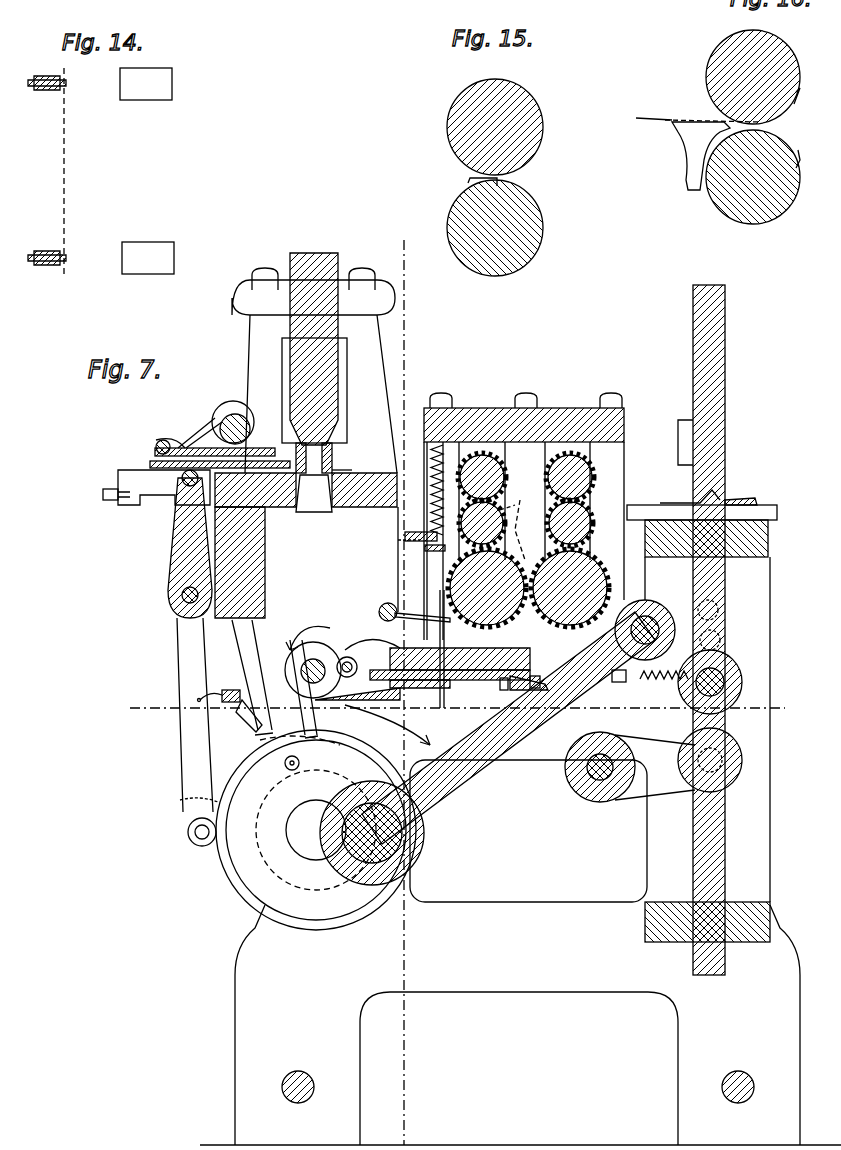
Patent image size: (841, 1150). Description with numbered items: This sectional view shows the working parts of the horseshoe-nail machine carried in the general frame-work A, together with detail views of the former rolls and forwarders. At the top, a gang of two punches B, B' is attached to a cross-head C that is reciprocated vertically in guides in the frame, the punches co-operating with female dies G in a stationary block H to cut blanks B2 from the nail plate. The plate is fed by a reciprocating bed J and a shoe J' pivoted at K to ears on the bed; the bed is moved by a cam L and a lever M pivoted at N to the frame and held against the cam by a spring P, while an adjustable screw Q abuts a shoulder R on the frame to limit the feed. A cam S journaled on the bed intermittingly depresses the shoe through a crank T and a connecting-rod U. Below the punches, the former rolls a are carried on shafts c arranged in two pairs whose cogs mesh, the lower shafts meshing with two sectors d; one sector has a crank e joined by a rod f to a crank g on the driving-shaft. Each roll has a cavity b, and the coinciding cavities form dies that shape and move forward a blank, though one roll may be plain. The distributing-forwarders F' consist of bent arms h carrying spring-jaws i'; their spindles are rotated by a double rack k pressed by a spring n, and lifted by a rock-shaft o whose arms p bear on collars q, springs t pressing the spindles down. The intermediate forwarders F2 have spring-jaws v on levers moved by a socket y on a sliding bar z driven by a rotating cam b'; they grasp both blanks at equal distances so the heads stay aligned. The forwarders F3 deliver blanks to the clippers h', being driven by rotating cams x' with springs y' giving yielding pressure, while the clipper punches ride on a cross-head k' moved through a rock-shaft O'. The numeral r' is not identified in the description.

In FIG. 7, the frame-work A is at (520, 825).
In FIG. 7, the cross-head C is at (314, 363).
In FIG. 7, the punch B is at (298, 458).
In FIG. 7, the punch B' is at (331, 458).
In FIG. 7, the stationary block H is at (342, 460).
In FIG. 7, the female die G is at (314, 502).
In FIG. 7, the cam S is at (242, 415).
In FIG. 7, the crank T is at (200, 436).
In FIG. 7, the pivot K is at (155, 446).
In FIG. 7, the reciprocating bed J is at (209, 463).
In FIG. 7, the shoe J' is at (215, 441).
In FIG. 7, the adjustable screw Q is at (110, 500).
In FIG. 7, the shoulder R is at (164, 487).
In FIG. 7, the rock-shaft O' is at (174, 497).
In FIG. 7, the pivot N is at (165, 594).
In FIG. 7, the lever M is at (214, 686).
In FIG. 7, the spring P is at (240, 706).
In FIG. 7, the connecting-rod U is at (275, 679).
In FIG. 7, the cam L is at (323, 817).
In FIG. 7, the crank g is at (372, 833).
In FIG. 7, the rod f is at (508, 728).
In FIG. 7, the crank e is at (645, 623).
In FIG. 7, the cross-head k' is at (513, 630).
In FIG. 7, the spring-jaw i' is at (718, 606).
In FIG. 7, the pin r' is at (726, 634).
In FIG. 7, the shaft c is at (526, 499).
In FIG. 7, the cog-wheel or sector d is at (528, 588).
In FIG. 7, the spring t is at (428, 490).
In FIG. 7, the curved and bent arm h is at (425, 540).
In FIG. 7, the distributing-forwarder F' is at (397, 539).
In FIG. 14, the reciprocating forwarder F2 is at (40, 78).
In FIG. 16, the reciprocating forwarder F2 is at (676, 165).
In FIG. 7, the reciprocating forwarder F2 is at (516, 530).
In FIG. 7, the reciprocating forwarder F3 is at (688, 491).
In FIG. 7, the clipper or trimming-die h' is at (743, 487).
In FIG. 7, the rock-shaft o is at (387, 605).
In FIG. 7, the arm p is at (422, 611).
In FIG. 7, the collar q is at (435, 649).
In FIG. 7, the rotating cam b' is at (338, 663).
In FIG. 7, the double rack k is at (422, 671).
In FIG. 7, the spring n is at (503, 692).
In FIG. 7, the sliding bar z is at (534, 676).
In FIG. 7, the socket y is at (529, 689).
In FIG. 7, the rotating cam x' is at (509, 712).
In FIG. 7, the spring y' is at (650, 683).
In FIG. 14, the roll a is at (147, 171).
In FIG. 15, the roll a is at (495, 177).
In FIG. 16, the roll a is at (753, 127).
In FIG. 15, the cavity b is at (477, 184).
In FIG. 16, the cavity b is at (803, 128).
In FIG. 16, the blank B2 is at (654, 109).
In FIG. 14, the spring-jaw v is at (43, 170).